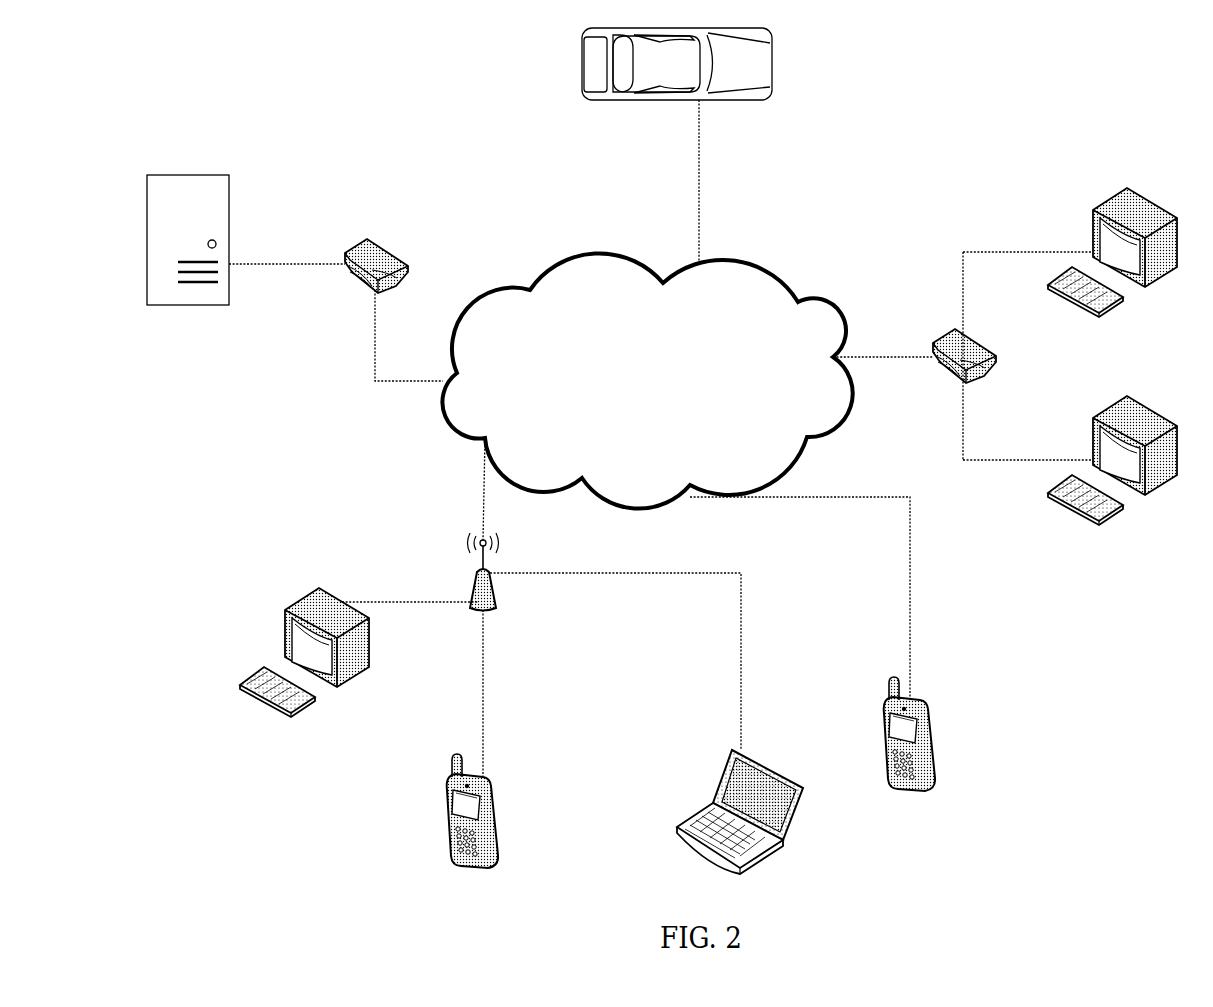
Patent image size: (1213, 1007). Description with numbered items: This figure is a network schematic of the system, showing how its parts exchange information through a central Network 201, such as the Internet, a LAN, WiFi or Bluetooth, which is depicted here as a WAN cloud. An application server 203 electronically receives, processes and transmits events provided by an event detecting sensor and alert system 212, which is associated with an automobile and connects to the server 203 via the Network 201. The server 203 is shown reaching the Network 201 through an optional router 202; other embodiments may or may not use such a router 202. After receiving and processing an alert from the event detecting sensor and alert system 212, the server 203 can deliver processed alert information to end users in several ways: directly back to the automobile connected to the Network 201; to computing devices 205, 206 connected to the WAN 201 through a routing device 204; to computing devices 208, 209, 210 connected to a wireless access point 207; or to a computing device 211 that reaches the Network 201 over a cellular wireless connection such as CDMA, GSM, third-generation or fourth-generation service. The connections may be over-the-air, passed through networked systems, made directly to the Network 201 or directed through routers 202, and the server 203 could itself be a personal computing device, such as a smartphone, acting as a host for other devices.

The Network 201 is at (647, 393).
The router 202 is at (350, 290).
The application server 203 is at (188, 257).
The routing device 204 is at (950, 373).
The computing device 205 is at (1119, 253).
The computing device 206 is at (1116, 466).
The wireless access point 207 is at (504, 578).
The computing device 208 is at (304, 658).
The computing device 209 is at (481, 831).
The computing device 210 is at (744, 822).
The computing device 211 is at (924, 755).
The event detecting sensor and alert system 212 is at (684, 83).